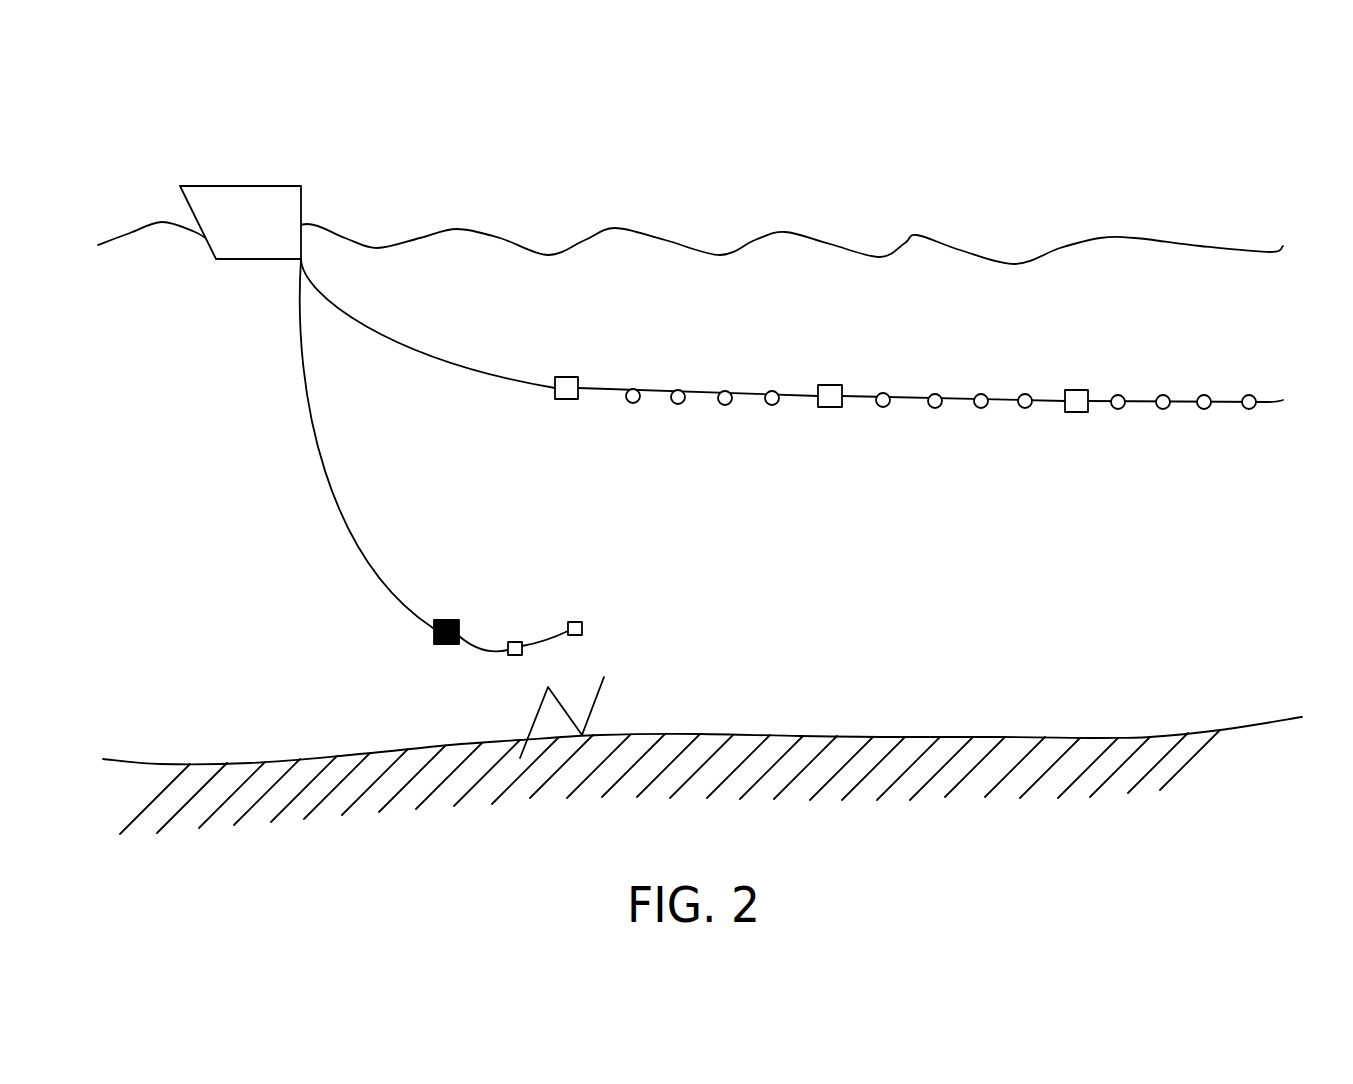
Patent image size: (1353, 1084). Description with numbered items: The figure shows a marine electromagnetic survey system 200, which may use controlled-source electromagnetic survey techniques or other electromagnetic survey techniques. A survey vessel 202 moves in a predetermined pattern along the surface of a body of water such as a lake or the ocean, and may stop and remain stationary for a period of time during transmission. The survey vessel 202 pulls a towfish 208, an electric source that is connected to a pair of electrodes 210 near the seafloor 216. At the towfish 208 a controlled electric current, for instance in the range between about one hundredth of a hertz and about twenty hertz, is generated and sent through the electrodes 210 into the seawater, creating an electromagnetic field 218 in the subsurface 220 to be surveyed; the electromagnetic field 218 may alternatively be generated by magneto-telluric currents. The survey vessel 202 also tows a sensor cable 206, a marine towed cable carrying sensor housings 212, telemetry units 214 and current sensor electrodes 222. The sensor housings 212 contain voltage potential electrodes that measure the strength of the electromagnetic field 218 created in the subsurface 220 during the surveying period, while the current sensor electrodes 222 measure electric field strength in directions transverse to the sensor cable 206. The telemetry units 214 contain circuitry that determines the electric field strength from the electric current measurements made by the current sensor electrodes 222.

The marine electromagnetic survey system 200 is at (1195, 100).
The survey vessel 202 is at (268, 186).
The sensor cable 206 is at (353, 320).
The towfish 208 is at (445, 620).
The electrodes 210 is at (522, 642).
The sensor housings 212 is at (639, 391).
The telemetry units 214 is at (570, 377).
The seafloor 216 is at (358, 750).
The electromagnetic field 218 is at (598, 703).
The subsurface 220 is at (950, 760).
The current sensor electrodes 222 is at (935, 408).